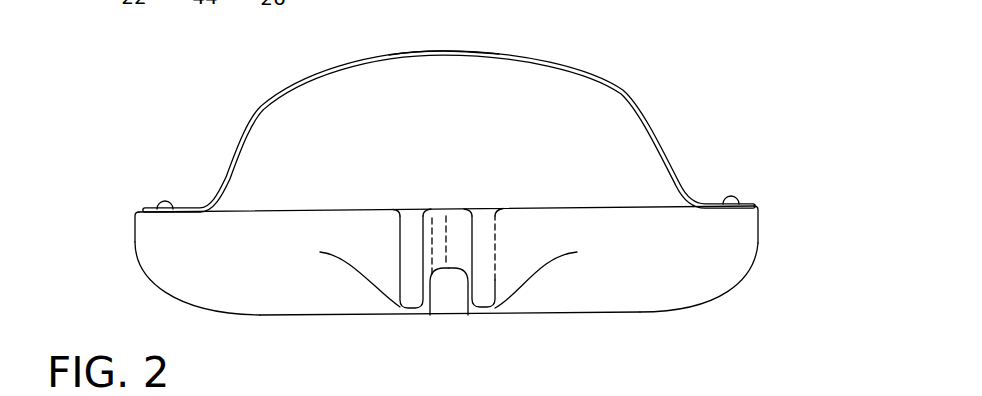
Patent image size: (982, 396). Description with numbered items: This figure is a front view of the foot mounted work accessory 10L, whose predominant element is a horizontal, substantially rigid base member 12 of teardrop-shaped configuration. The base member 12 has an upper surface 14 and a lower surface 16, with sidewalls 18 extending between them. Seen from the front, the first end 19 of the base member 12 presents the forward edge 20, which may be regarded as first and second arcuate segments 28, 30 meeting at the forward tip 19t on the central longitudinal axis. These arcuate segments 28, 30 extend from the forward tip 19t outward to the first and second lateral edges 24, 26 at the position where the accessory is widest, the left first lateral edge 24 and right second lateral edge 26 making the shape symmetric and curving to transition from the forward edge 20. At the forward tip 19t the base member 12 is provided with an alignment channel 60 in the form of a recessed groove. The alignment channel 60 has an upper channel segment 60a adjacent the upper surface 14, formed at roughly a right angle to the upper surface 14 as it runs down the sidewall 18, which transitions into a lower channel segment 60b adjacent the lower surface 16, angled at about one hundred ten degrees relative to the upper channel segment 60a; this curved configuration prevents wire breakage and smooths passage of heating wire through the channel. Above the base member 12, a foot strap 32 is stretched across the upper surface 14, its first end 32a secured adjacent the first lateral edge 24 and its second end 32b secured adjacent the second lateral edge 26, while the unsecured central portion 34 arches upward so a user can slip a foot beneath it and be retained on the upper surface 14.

The foot mounted work accessory 10L is at (694, 116).
The base member 12 is at (727, 253).
The upper surface 14 is at (302, 210).
The lower surface 16 is at (273, 317).
The sidewalls 18 is at (135, 233).
The first end 19 is at (527, 260).
The forward tip 19t is at (495, 240).
The forward edge 20 is at (592, 268).
The first lateral edge 24 is at (148, 274).
The second lateral edge 26 is at (735, 283).
The first arcuate segment 28 is at (262, 227).
The second arcuate segment 30 is at (625, 237).
The foot strap 32 is at (620, 88).
The first end of strap 32a is at (147, 207).
The second end of strap 32b is at (748, 205).
The central portion of strap 34 is at (440, 53).
The alignment channel 60 is at (436, 317).
The upper channel segment 60a is at (440, 211).
The lower channel segment 60b is at (457, 294).